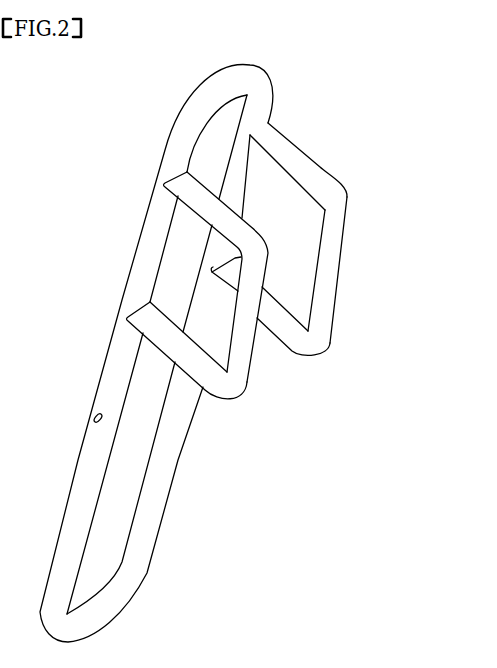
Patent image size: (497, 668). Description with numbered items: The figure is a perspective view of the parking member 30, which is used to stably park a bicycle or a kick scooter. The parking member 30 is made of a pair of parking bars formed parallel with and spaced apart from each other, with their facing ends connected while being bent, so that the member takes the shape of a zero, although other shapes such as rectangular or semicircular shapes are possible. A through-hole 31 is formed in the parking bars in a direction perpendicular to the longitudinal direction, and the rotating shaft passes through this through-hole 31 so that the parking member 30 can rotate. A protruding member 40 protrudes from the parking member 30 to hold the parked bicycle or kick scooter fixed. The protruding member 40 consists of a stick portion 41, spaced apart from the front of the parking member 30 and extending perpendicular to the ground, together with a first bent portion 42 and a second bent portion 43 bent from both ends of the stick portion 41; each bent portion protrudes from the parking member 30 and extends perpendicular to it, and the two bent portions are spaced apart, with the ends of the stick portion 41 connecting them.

The parking member 30 is at (267, 88).
The through-hole 31 is at (93, 418).
The protruding member 40 is at (307, 261).
The stick portion 41 is at (338, 257).
The first bent portion 42 is at (310, 168).
The second bent portion 43 is at (264, 292).